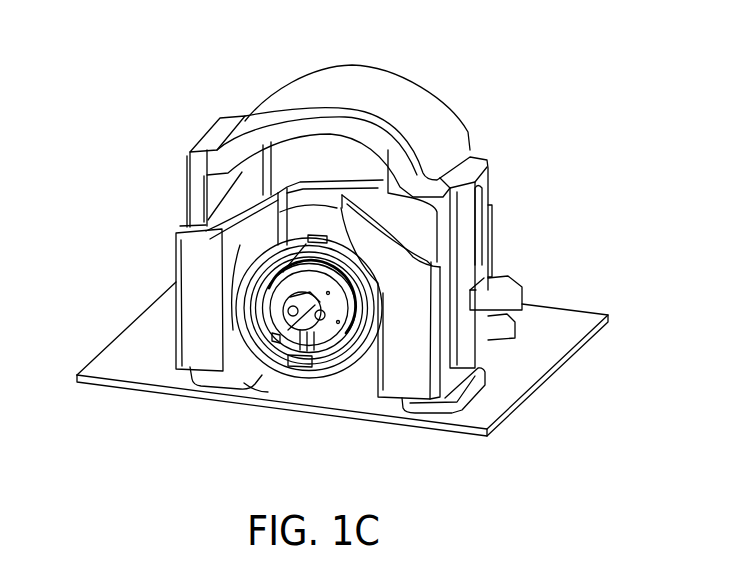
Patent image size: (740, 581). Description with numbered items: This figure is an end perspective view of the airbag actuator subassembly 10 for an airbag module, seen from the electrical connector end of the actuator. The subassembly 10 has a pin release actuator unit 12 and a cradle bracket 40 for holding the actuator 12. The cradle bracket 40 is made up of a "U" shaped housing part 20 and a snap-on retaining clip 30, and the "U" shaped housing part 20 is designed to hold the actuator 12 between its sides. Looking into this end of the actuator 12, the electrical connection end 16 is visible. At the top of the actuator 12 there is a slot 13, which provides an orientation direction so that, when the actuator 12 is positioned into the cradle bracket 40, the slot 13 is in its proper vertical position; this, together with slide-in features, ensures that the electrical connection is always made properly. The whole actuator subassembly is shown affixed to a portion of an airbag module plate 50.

The airbag actuator subassembly 10 is at (153, 107).
The pin release actuator unit 12 is at (264, 380).
The slot 13 is at (313, 248).
The electrical connection end 16 is at (295, 370).
The "U" shaped housing part 20 is at (183, 270).
The snap-on retaining clip 30 is at (188, 181).
The cradle bracket 40 is at (487, 131).
The base plate 50 is at (558, 352).